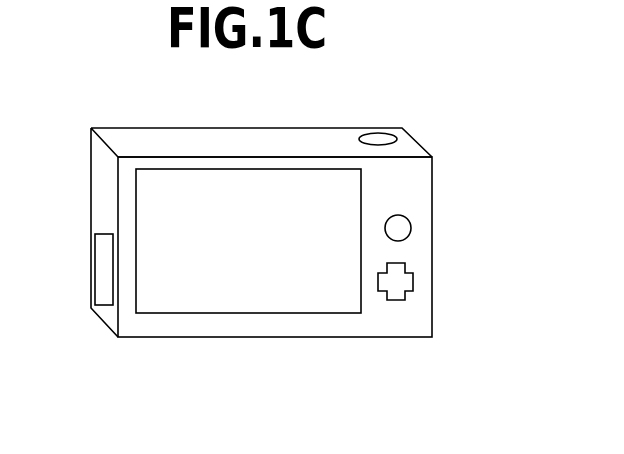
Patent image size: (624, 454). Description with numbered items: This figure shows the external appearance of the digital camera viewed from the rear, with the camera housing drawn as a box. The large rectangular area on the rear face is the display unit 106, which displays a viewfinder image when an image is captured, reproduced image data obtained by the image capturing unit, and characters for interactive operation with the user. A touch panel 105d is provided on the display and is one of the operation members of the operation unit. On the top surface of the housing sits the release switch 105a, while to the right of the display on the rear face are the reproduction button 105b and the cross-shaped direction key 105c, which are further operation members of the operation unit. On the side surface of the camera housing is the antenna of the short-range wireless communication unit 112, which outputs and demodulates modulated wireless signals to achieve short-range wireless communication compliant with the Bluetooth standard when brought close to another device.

The display unit 106 is at (343, 192).
The release switch 105a is at (379, 133).
The reproduction button 105b is at (412, 228).
The direction key 105c is at (415, 282).
The touch panel 105d is at (187, 167).
The short-range wireless communication unit 112 is at (93, 272).